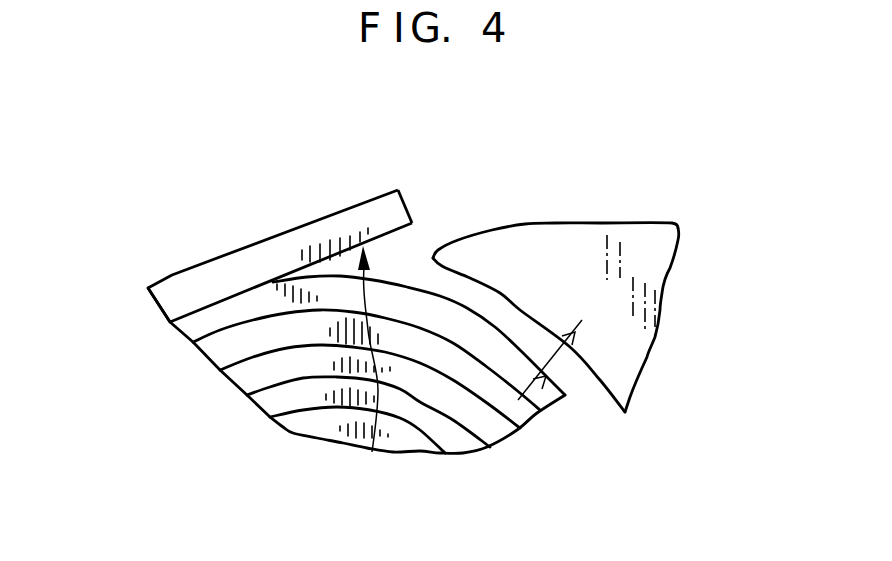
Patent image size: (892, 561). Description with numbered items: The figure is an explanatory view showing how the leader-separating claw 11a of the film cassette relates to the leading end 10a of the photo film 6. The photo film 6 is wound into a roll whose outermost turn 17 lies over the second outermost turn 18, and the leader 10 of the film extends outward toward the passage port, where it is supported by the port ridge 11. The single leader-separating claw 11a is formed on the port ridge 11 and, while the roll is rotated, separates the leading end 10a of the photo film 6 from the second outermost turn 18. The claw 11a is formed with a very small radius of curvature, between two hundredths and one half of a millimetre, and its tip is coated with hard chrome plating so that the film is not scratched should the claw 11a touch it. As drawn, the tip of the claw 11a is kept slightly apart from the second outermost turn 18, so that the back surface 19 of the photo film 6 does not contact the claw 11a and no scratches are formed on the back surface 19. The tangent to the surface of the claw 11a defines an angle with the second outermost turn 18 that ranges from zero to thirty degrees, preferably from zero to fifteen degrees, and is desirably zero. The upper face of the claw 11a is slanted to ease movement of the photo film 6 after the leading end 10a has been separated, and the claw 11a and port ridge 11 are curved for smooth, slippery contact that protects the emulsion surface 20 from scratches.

The photo film 6 is at (188, 240).
The leader 10 is at (337, 224).
The leading end 10a is at (408, 204).
The port ridge 11 is at (645, 316).
The leader-separating claw 11a is at (586, 223).
The outermost turn 17 is at (172, 303).
The second outermost turn 18 is at (197, 332).
The back surface 19 is at (410, 250).
The emulsion surface 20 is at (371, 368).